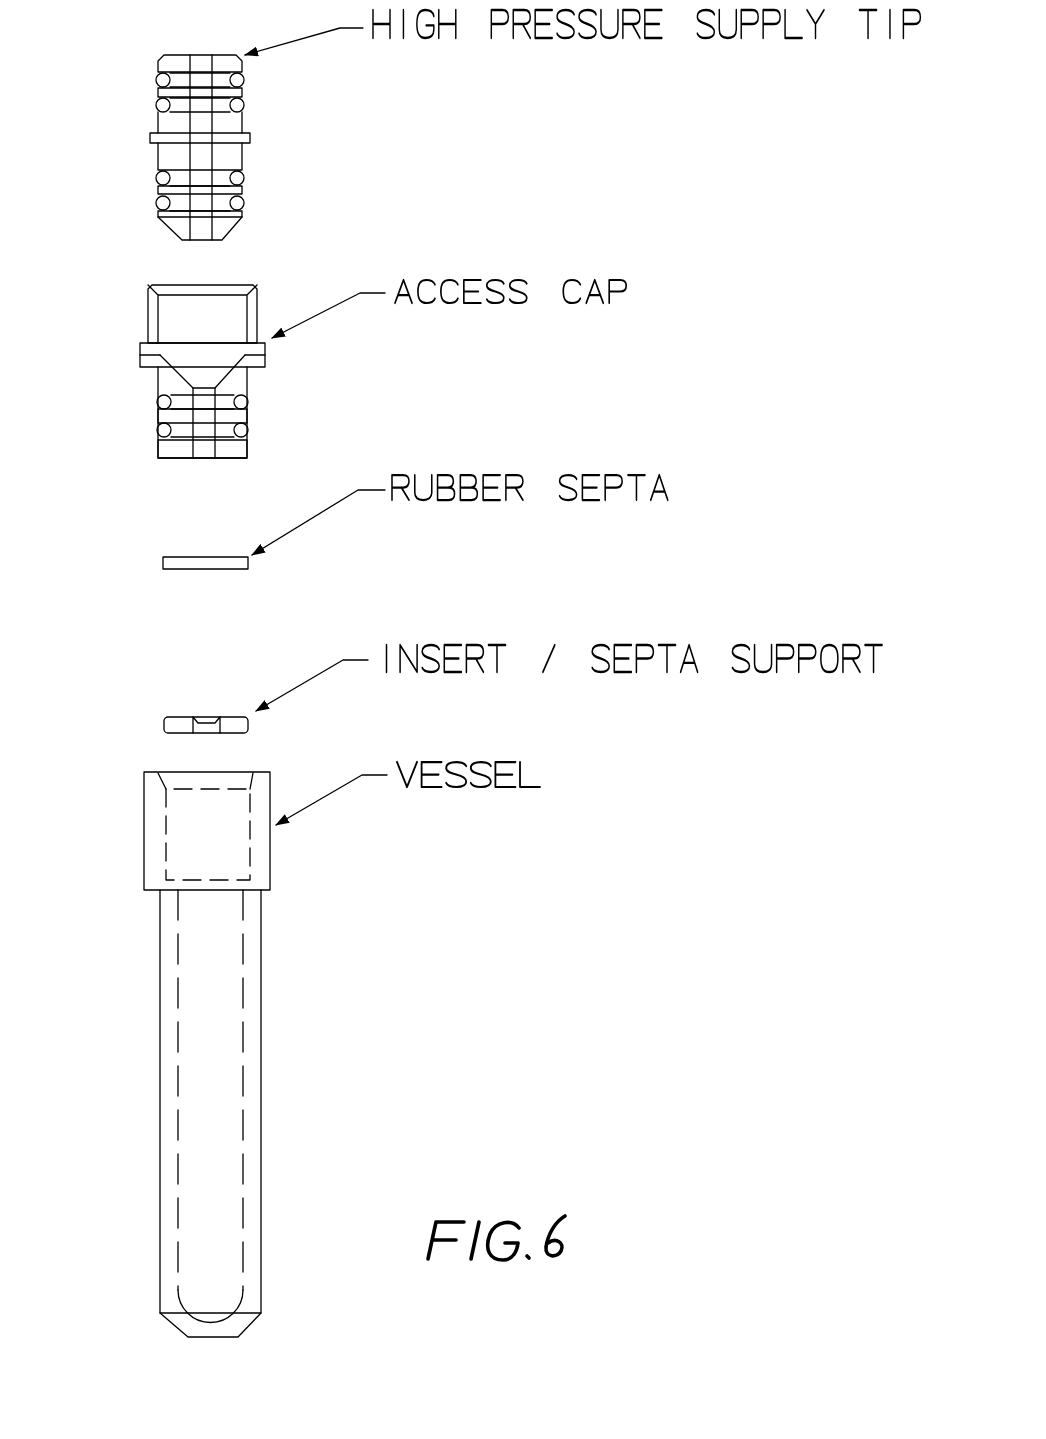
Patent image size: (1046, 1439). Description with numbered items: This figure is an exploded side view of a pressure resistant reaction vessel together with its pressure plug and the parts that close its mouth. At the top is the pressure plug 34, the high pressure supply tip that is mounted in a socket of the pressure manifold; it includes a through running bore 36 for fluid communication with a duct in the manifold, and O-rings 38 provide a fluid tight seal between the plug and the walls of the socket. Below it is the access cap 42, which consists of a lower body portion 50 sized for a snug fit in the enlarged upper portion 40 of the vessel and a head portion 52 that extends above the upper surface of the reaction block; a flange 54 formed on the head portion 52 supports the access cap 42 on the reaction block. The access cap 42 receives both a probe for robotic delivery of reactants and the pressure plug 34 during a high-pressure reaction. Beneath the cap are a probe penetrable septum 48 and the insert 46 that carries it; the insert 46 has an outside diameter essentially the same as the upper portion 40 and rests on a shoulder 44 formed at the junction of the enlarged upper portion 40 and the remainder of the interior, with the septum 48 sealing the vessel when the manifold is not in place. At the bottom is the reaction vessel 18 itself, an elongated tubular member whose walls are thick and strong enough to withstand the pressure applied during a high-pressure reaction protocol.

The reaction vessel 18 is at (262, 1033).
The pressure plug 34 is at (158, 166).
The through running bore 36 is at (195, 128).
The O-rings 38 is at (158, 178).
The upper portion 40 is at (192, 822).
The access cap 42 is at (192, 349).
The shoulder 44 is at (166, 882).
The insert 46 is at (164, 722).
The probe penetrable septum 48 is at (163, 560).
The lower body portion 50 is at (158, 390).
The head portion 52 is at (148, 310).
The flange 54 is at (140, 354).